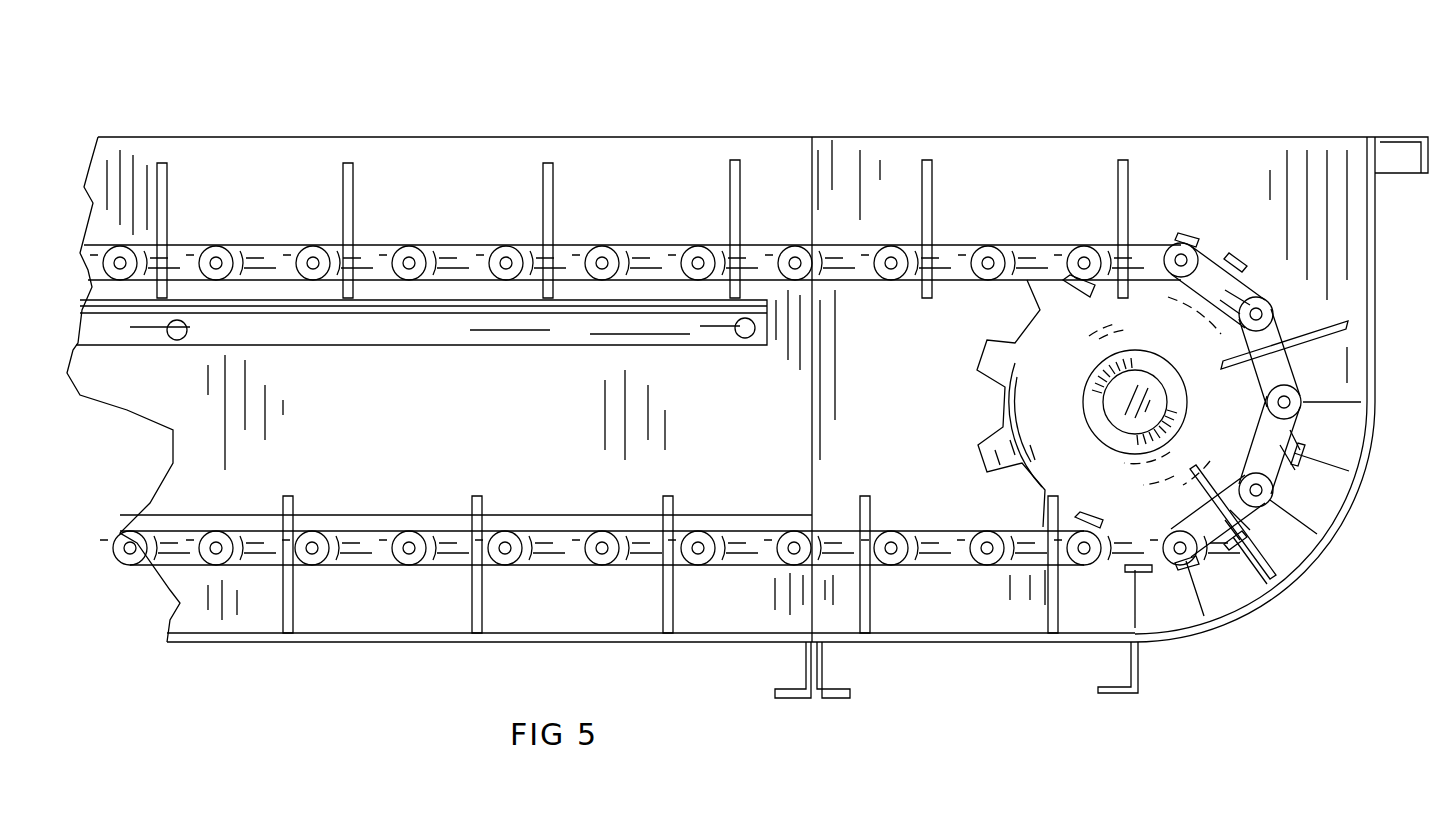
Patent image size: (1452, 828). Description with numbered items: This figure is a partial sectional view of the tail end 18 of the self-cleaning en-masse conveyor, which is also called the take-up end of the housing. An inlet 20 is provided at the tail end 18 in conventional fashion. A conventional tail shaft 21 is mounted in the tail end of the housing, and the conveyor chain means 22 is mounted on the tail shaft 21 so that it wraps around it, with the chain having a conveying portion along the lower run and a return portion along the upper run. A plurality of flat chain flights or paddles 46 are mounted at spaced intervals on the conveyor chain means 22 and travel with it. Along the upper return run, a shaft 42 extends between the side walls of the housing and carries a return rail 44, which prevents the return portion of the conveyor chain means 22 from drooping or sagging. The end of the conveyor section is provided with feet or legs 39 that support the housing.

The tail end 18 is at (1380, 400).
The inlet 20 is at (1287, 120).
The tail shaft 21 is at (1112, 400).
The conveyor chain means 22 is at (460, 243).
The feet or legs 39 is at (806, 672).
The shafts 42 is at (742, 337).
The return rails 44 is at (390, 310).
The flat chain flights or paddles 46 is at (170, 163).